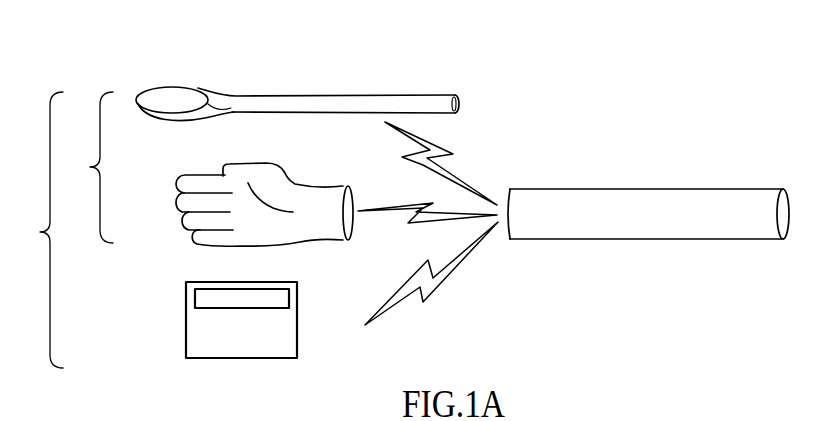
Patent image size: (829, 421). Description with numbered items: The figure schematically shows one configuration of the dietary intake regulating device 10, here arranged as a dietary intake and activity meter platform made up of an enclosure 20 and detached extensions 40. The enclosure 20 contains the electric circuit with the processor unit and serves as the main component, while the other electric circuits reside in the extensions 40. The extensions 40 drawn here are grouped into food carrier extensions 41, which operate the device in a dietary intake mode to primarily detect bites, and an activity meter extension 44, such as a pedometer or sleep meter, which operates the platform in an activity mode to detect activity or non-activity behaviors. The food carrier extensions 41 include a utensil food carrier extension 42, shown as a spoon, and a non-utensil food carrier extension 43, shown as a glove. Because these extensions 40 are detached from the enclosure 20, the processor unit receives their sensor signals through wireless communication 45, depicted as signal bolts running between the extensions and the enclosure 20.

The dietary intake regulating device 10 is at (575, 77).
The enclosure 20 is at (653, 160).
The extension 40 is at (35, 230).
The food carrier extension 41 is at (87, 167).
The utensil food carrier extension 42 is at (352, 97).
The non-utensil food carrier extension 43 is at (307, 195).
The activity meter extension 44 is at (189, 324).
The wireless communication 45 is at (465, 285).